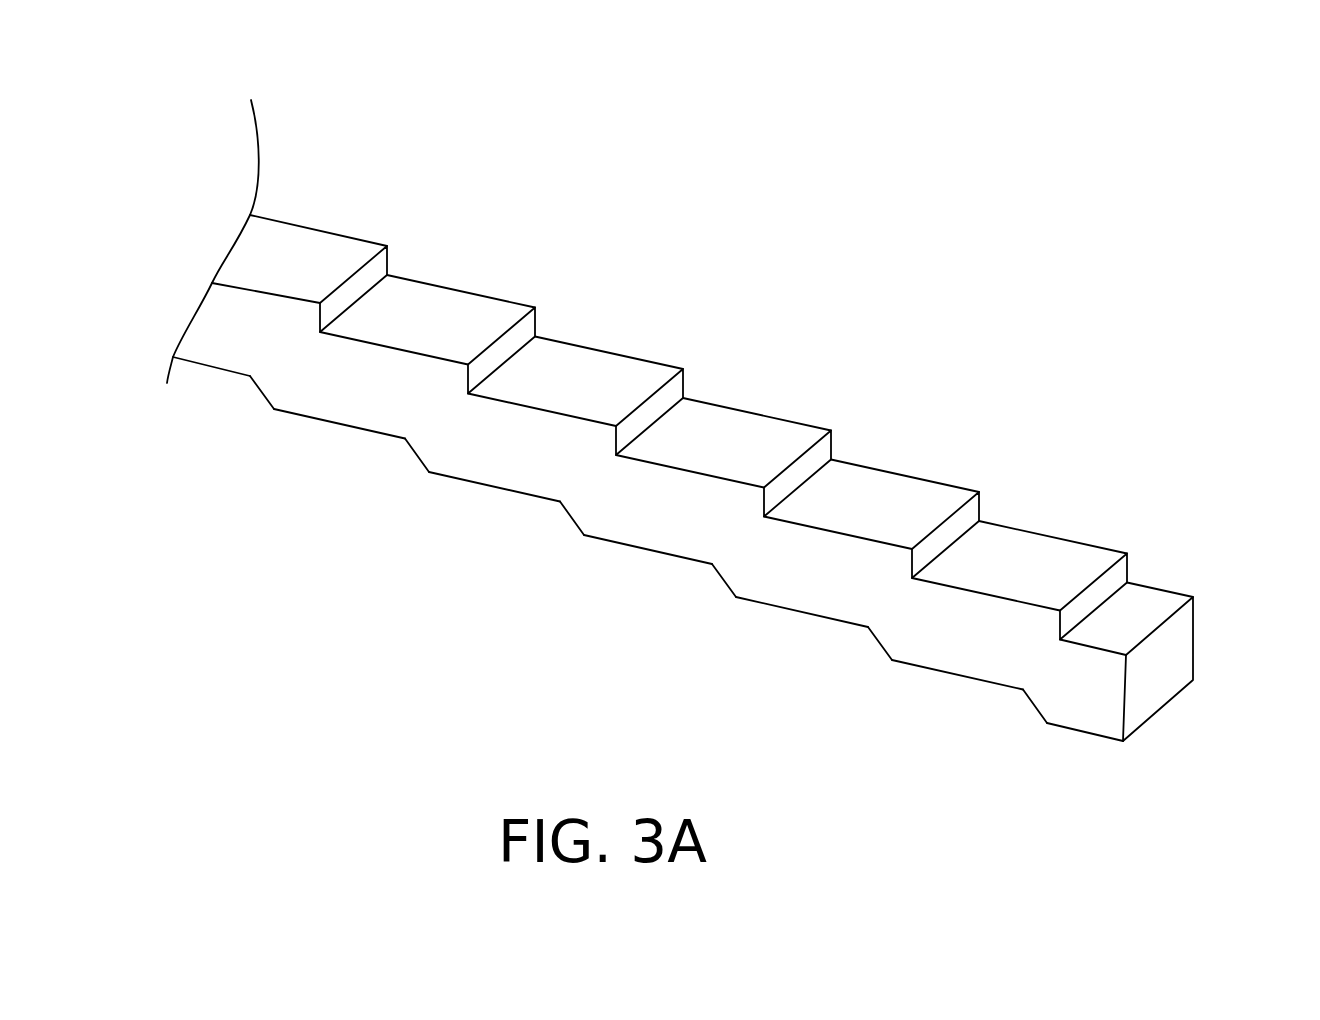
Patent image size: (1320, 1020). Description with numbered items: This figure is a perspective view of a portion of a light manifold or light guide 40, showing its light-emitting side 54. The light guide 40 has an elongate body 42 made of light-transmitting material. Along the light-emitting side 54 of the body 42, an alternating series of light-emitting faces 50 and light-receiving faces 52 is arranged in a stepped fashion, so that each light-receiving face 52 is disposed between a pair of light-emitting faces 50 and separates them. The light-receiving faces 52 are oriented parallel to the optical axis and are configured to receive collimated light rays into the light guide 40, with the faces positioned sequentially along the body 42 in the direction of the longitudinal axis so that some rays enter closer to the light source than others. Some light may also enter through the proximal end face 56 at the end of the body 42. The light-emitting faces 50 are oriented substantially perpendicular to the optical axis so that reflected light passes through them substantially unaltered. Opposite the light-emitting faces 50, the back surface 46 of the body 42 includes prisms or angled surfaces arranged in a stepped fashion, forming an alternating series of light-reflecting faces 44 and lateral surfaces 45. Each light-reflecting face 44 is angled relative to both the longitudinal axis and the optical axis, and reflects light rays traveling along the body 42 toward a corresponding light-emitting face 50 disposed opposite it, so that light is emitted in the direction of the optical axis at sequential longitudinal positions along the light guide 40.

The light guide 40 is at (756, 164).
The body 42 is at (693, 532).
The light-reflecting faces 44 is at (260, 393).
The lateral surfaces 45 is at (197, 365).
The back surface 46 is at (918, 691).
The light-emitting faces 50 is at (274, 242).
The light-receiving faces 52 is at (378, 267).
The light-emitting side 54 is at (729, 397).
The proximal end face 56 is at (1173, 652).